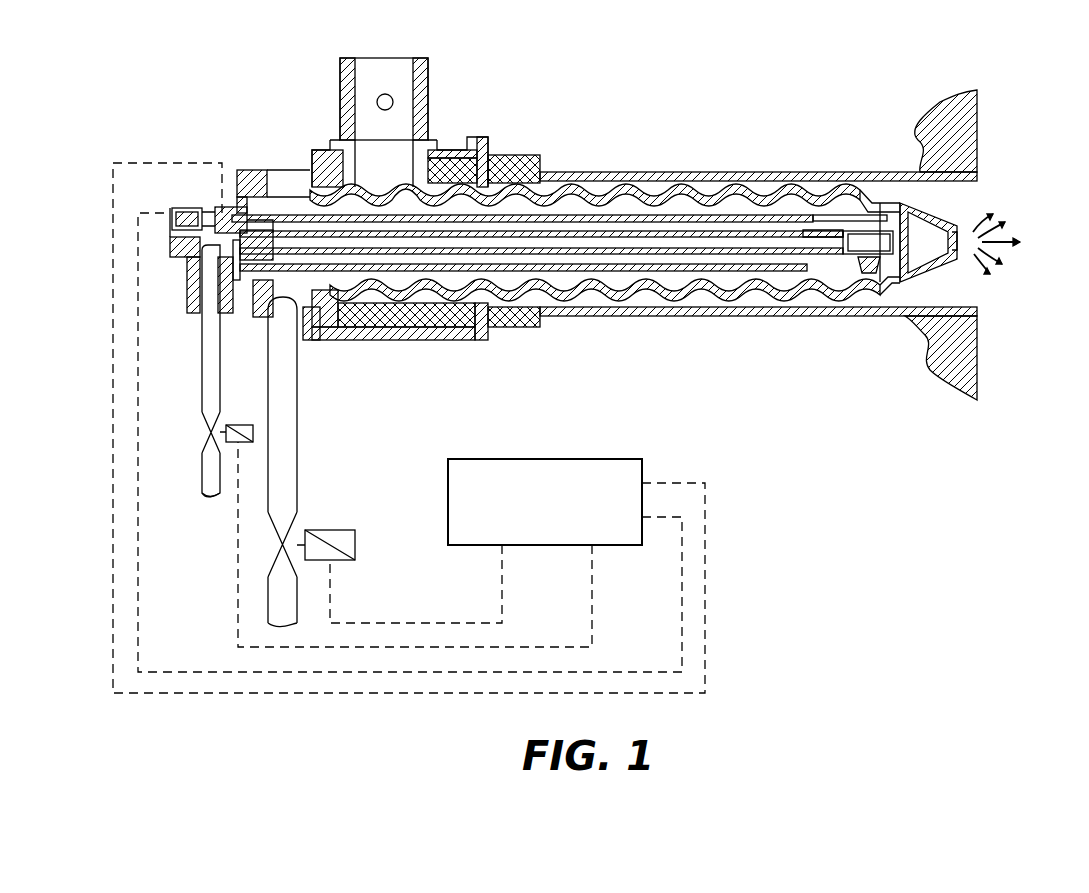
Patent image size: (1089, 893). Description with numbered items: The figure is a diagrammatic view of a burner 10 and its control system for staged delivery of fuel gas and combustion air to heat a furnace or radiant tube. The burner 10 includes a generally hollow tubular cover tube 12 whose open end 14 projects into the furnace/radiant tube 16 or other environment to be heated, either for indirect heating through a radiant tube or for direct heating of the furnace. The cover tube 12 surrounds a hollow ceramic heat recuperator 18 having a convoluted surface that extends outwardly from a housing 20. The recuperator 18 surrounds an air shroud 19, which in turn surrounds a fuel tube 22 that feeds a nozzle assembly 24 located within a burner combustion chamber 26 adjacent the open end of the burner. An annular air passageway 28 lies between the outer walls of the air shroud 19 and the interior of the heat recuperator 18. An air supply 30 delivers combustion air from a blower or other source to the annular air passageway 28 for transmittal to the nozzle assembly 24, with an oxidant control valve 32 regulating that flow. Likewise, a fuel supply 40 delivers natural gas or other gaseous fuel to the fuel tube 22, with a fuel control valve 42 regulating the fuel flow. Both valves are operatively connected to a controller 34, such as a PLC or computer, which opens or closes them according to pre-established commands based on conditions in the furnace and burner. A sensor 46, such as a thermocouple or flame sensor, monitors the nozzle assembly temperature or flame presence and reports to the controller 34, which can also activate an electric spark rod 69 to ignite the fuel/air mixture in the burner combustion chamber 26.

The burner 10 is at (680, 122).
The cover tube 12 is at (866, 172).
The open end 14 is at (966, 208).
The furnace/radiant tube 16 is at (1051, 264).
The heat recuperator 18 is at (733, 290).
The air shroud 19 is at (308, 220).
The housing 20 is at (518, 146).
The fuel tube 22 is at (735, 232).
The nozzle assembly 24 is at (905, 258).
The burner combustion chamber 26 is at (928, 242).
The annular air passageway 28 is at (634, 276).
The air supply 30 is at (270, 608).
The oxidant control valve 32 is at (334, 540).
The controller 34 is at (565, 458).
The fuel supply 40 is at (210, 486).
The fuel control valve 42 is at (240, 424).
The sensor 46 is at (182, 210).
The electric spark rod 69 is at (836, 216).